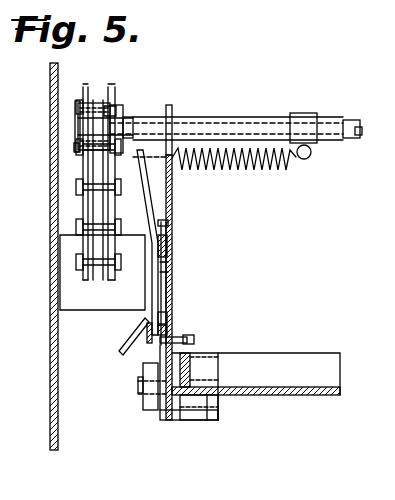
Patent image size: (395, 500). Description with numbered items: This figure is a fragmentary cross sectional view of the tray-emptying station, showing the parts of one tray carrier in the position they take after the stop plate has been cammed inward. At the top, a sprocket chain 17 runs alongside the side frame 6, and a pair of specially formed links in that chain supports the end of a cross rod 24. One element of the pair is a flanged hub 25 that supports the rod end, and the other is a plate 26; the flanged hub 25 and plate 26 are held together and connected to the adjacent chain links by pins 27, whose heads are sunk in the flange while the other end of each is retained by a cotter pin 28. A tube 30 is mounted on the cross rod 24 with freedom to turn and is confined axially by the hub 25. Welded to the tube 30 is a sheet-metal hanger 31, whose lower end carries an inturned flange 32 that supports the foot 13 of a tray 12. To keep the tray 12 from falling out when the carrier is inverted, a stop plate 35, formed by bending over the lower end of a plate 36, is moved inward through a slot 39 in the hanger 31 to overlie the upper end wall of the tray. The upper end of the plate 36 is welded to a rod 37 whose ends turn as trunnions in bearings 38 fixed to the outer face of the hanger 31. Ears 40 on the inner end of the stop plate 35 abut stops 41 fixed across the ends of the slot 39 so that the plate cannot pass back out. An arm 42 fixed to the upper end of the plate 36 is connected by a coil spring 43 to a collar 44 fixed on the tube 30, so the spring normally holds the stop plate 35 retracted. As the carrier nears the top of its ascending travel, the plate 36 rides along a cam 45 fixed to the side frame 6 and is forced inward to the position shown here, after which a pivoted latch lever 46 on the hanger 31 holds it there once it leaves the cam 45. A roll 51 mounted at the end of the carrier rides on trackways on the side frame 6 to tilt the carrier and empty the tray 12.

The side frame 6 is at (52, 178).
The tray 12 is at (308, 360).
The foot 13 is at (205, 405).
The sprocket chain 17 is at (80, 207).
The cross rod 24 is at (350, 123).
The flanged hub 25 is at (128, 117).
The plate 26 is at (80, 123).
The pin 27 is at (114, 104).
The cotter pin 28 is at (76, 108).
The tube 30 is at (241, 118).
The hanger 31 is at (173, 268).
The inturned flange 32 is at (193, 421).
The stop plate 35 is at (168, 337).
The plate 36 is at (163, 280).
The rod 37 is at (177, 245).
The bearing 38 is at (173, 222).
The slot 39 is at (170, 328).
The ear 40 is at (194, 342).
The stop 41 is at (173, 318).
The arm 42 is at (150, 224).
The coil spring 43 is at (262, 166).
The collar 44 is at (303, 114).
The cam 45 is at (136, 331).
The latch lever 46 is at (137, 347).
The roll 51 is at (148, 395).